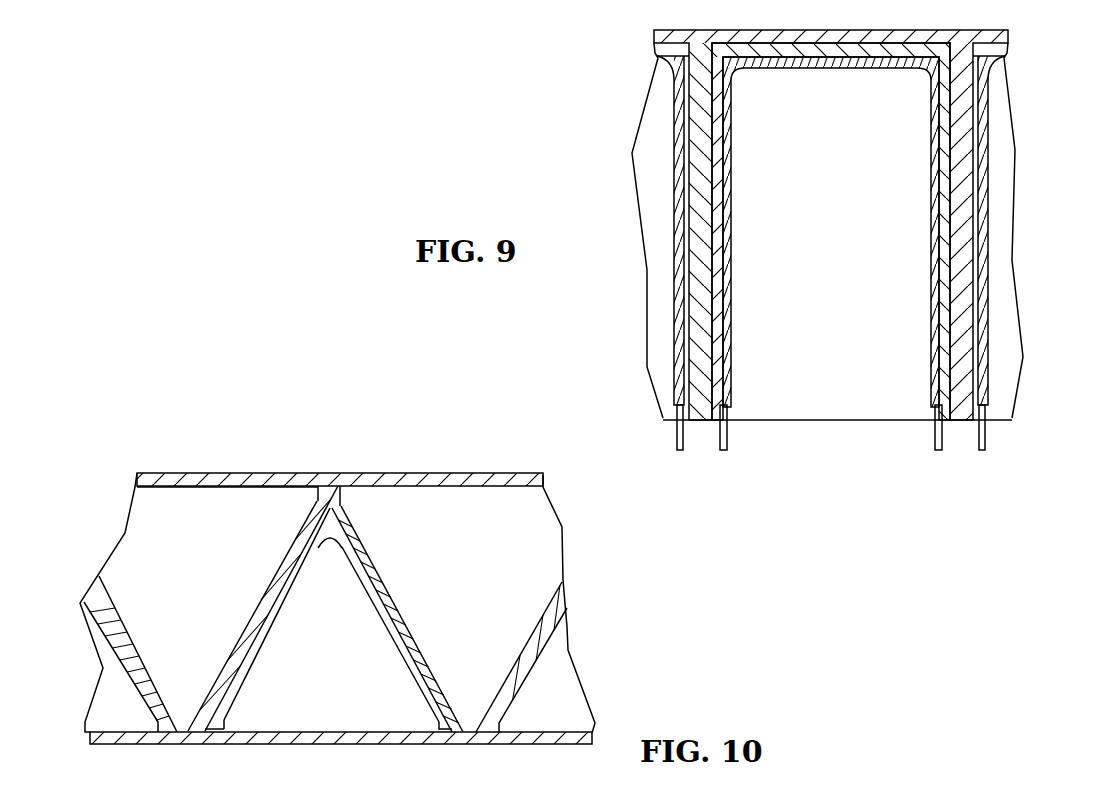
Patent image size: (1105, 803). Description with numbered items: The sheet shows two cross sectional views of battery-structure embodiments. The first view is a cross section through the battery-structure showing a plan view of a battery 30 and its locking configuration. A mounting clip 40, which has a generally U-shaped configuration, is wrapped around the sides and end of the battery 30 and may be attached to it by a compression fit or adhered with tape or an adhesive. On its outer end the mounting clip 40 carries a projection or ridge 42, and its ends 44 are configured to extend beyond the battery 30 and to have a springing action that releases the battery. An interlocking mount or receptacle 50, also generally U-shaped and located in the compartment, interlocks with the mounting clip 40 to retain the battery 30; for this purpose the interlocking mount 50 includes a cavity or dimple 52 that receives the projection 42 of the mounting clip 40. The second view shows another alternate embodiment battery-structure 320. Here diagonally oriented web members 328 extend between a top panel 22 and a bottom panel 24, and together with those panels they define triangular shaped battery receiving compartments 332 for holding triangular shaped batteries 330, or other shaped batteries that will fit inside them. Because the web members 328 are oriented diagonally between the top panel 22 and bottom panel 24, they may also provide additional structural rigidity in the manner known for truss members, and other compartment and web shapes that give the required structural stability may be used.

In FIG. 10, the top panel 22 is at (388, 472).
In FIG. 10, the bottom panel 24 is at (365, 746).
In FIG. 9, the battery 30 is at (797, 412).
In FIG. 9, the mounting clip 40 is at (927, 320).
In FIG. 9, the projection 42 is at (714, 422).
In FIG. 9, the end of mounting clip 44 is at (727, 440).
In FIG. 9, the interlocking mount 50 is at (720, 300).
In FIG. 9, the dimple 52 is at (941, 410).
In FIG. 10, the battery-structure 320 is at (238, 464).
In FIG. 10, the web member 328 is at (233, 660).
In FIG. 10, the triangular shaped battery 330 is at (300, 713).
In FIG. 10, the battery receiving compartment 332 is at (270, 508).